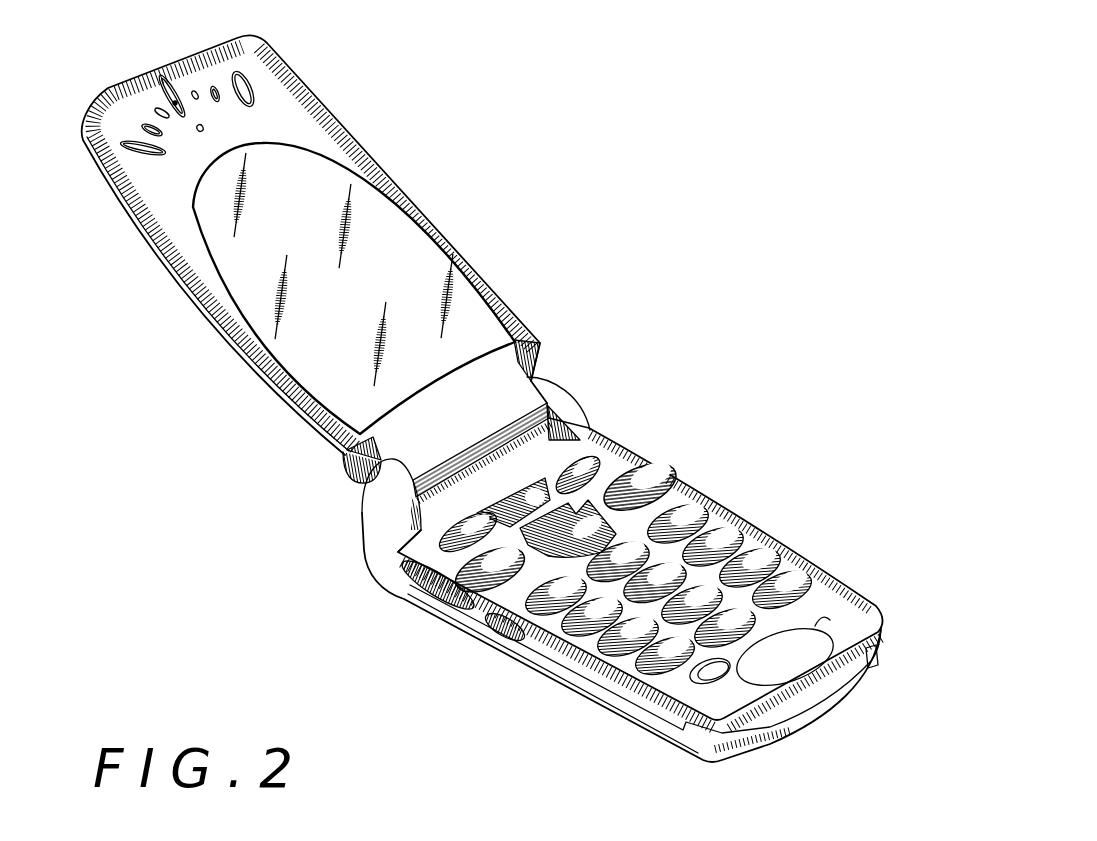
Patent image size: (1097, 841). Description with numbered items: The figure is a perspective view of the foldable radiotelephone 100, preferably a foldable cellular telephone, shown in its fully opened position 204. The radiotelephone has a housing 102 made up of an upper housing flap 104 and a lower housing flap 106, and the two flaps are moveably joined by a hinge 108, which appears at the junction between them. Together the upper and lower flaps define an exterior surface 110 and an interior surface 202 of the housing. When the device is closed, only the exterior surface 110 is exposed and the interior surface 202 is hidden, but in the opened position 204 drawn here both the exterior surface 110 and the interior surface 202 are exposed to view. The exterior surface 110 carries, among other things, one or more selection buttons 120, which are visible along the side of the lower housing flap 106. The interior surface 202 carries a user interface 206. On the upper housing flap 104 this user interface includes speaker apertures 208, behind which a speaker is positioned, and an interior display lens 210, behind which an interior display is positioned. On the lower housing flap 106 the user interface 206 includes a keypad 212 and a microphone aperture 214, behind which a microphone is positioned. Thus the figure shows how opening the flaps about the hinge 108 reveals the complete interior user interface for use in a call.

The foldable radiotelephone 100 is at (701, 257).
The housing 102 is at (335, 267).
The upper housing flap 104 is at (335, 267).
The lower housing flap 106 is at (584, 680).
The hinge 108 is at (380, 480).
The exterior surface 110 is at (252, 366).
The selection buttons 120 is at (455, 598).
The interior surface 202 is at (675, 570).
The opened position 204 is at (639, 535).
The user interface 206 is at (639, 535).
The speaker apertures 208 is at (194, 92).
The interior display lens 210 is at (236, 290).
The keypad 212 is at (582, 513).
The microphone aperture 214 is at (822, 627).